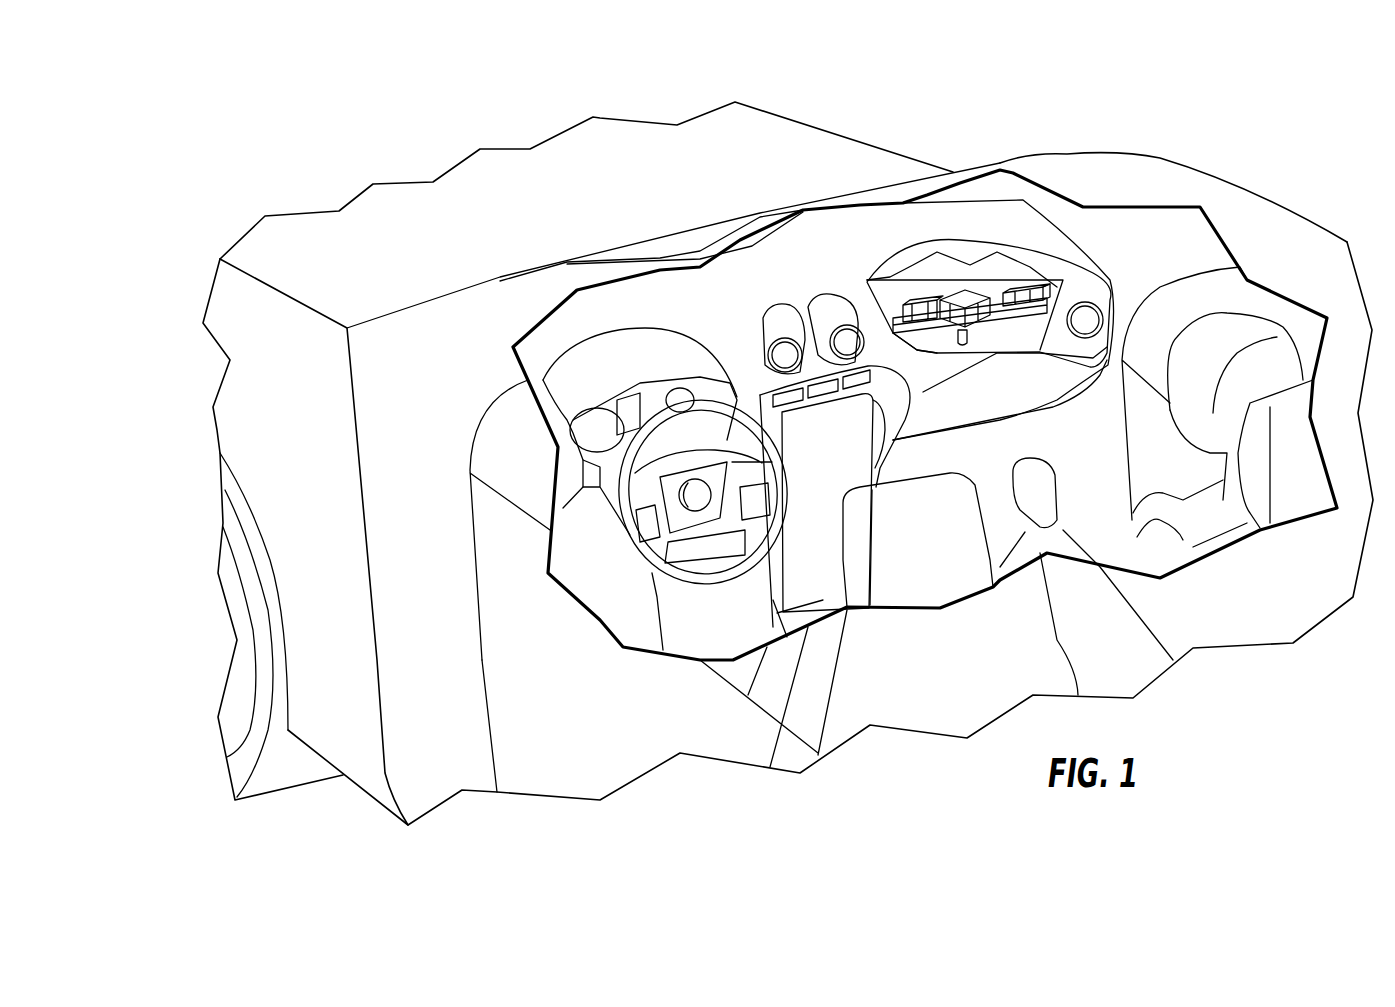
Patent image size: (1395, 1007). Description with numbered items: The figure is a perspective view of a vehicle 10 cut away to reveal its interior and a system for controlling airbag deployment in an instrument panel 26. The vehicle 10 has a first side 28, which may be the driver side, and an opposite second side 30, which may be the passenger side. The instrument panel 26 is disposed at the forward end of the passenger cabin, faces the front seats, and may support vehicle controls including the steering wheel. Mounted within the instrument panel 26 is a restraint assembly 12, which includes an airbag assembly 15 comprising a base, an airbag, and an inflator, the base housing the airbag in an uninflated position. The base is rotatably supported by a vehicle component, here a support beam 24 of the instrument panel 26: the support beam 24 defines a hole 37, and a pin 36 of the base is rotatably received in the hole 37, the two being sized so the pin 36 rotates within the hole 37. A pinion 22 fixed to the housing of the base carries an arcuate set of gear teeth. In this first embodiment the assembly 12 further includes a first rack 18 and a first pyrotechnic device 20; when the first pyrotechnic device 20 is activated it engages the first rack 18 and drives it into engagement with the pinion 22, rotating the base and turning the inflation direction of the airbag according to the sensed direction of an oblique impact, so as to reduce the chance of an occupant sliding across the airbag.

The vehicle 10 is at (467, 183).
The restraint assembly 12 is at (1152, 93).
The airbag assembly 15 is at (950, 295).
The first rack 18 is at (1037, 287).
The first pyrotechnic device 20 is at (1042, 290).
The pinion 22 is at (1003, 287).
The support beam 24 is at (893, 310).
The instrument panel 26 is at (782, 295).
The first side 28 is at (442, 717).
The second side 30 is at (1283, 207).
The pin 36 is at (973, 340).
The hole 37 is at (950, 347).